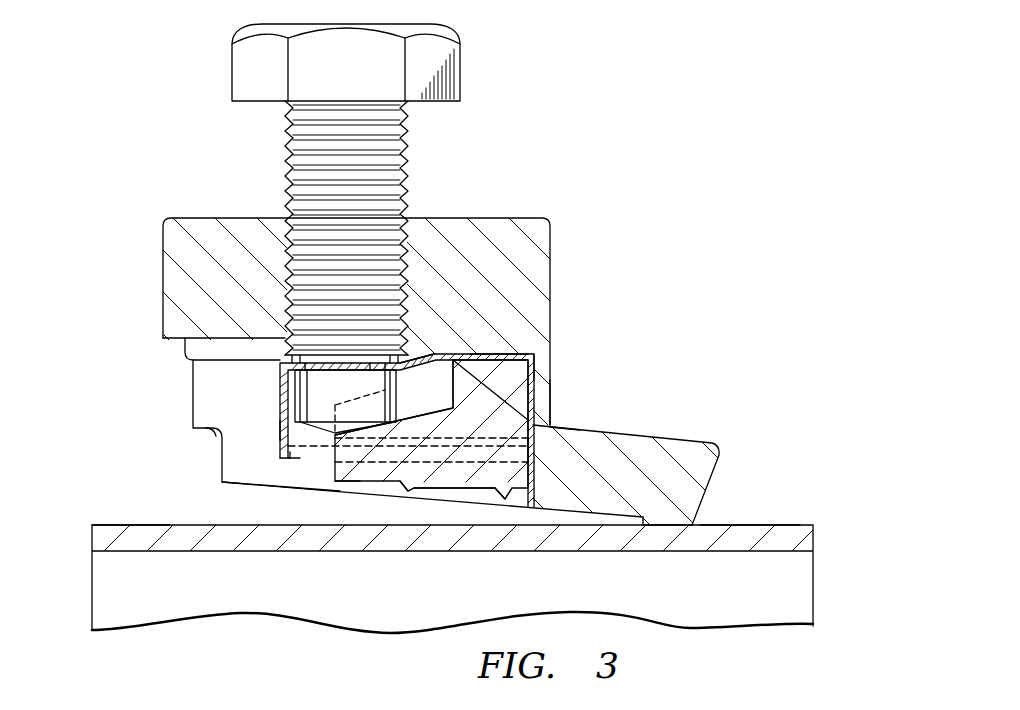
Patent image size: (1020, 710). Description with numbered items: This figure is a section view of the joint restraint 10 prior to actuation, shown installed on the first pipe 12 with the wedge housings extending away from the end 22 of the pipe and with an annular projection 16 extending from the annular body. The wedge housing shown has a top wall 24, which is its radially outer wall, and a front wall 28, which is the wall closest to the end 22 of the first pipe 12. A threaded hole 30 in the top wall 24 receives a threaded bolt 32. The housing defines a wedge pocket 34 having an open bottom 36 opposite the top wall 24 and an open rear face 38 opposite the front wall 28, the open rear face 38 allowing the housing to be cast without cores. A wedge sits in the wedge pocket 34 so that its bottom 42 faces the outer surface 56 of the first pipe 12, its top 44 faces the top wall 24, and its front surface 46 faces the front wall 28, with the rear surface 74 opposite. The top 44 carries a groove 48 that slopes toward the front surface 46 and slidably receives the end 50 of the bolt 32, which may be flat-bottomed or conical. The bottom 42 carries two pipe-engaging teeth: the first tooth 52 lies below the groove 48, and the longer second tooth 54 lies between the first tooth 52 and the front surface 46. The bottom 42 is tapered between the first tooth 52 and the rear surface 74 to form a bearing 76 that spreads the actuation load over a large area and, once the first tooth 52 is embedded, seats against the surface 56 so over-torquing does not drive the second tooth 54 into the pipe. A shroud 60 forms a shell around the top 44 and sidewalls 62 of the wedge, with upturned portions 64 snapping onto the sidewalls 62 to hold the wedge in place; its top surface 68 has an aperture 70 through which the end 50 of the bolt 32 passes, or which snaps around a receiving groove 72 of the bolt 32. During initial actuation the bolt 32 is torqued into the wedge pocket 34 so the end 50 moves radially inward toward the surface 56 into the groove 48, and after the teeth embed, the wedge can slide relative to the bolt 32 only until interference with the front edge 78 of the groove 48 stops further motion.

The joint restraint 10 is at (656, 126).
The first pipe 12 is at (752, 523).
The annular projection 16 is at (680, 441).
The end of the first pipe 22 is at (815, 540).
The top wall 24 is at (192, 350).
The front wall 28 is at (540, 424).
The hole 30 is at (413, 258).
The bolt 32 is at (463, 72).
The wedge pocket 34 is at (206, 470).
The open bottom 36 is at (250, 488).
The open rear face 38 is at (212, 442).
The bottom of the wedge 42 is at (455, 490).
The top of the wedge 44 is at (462, 352).
The front surface of the wedge 46 is at (562, 432).
The groove 48 is at (417, 413).
The end of the bolt 50 is at (283, 427).
The first tooth 52 is at (402, 492).
The second tooth 54 is at (505, 500).
The outer surface of the first pipe 56 is at (132, 523).
The shroud 60 is at (534, 358).
The sidewalls of the wedge 62 is at (498, 428).
The upturned portions 64 is at (300, 458).
The top surface of the shroud 68 is at (425, 357).
The aperture 70 is at (314, 404).
The receiving groove 72 is at (298, 400).
The rear surface of the wedge 74 is at (322, 492).
The bearing 76 is at (346, 492).
The front edge of the groove 78 is at (497, 352).